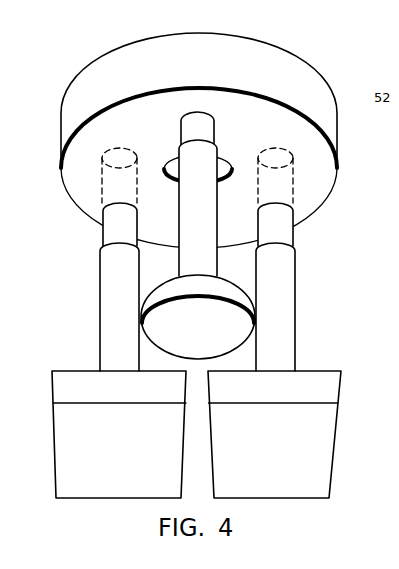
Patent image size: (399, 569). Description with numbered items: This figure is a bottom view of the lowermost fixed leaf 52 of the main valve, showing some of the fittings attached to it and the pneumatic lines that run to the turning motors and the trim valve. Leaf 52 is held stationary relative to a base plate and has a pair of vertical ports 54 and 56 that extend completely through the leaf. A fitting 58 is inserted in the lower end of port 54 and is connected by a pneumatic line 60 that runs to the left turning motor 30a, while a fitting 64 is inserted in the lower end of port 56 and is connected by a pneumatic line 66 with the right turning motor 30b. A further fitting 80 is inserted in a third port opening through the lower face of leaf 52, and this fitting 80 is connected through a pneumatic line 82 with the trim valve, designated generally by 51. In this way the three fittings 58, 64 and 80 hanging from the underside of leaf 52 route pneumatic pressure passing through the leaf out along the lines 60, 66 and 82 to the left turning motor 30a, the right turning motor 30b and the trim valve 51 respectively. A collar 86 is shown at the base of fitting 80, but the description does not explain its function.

The lowermost fixed leaf 52 is at (137, 50).
The vertical port 54 is at (118, 173).
The vertical port 56 is at (292, 168).
The fitting 58 is at (110, 237).
The pneumatic line 60 is at (107, 298).
The fitting 64 is at (282, 238).
The pneumatic line 66 is at (285, 297).
The fitting 80 is at (207, 127).
The pneumatic line 82 is at (205, 207).
The collar 86 is at (172, 172).
The trim valve 51 is at (183, 285).
The left turning motor 30a is at (62, 460).
The right turning motor 30b is at (323, 460).